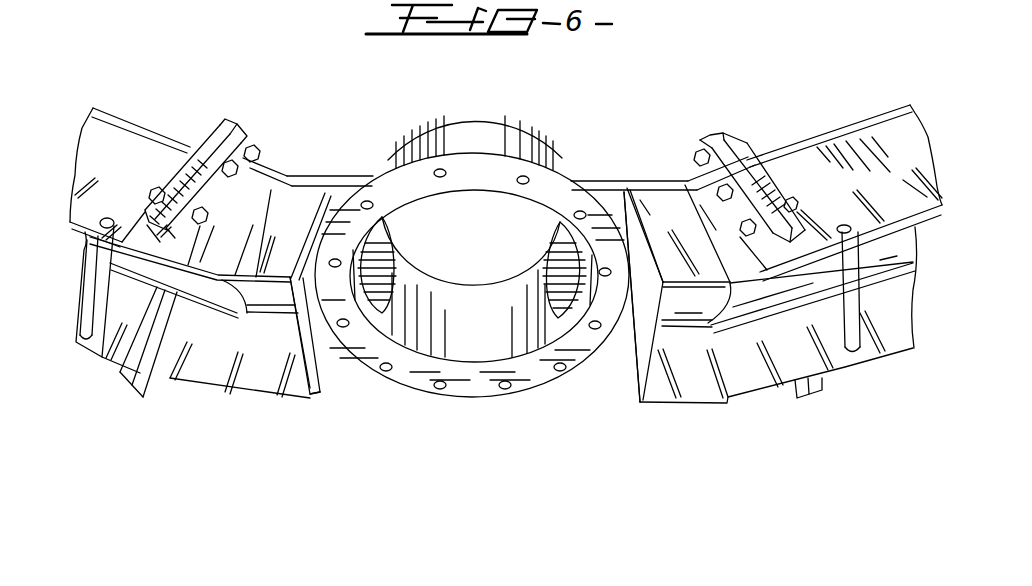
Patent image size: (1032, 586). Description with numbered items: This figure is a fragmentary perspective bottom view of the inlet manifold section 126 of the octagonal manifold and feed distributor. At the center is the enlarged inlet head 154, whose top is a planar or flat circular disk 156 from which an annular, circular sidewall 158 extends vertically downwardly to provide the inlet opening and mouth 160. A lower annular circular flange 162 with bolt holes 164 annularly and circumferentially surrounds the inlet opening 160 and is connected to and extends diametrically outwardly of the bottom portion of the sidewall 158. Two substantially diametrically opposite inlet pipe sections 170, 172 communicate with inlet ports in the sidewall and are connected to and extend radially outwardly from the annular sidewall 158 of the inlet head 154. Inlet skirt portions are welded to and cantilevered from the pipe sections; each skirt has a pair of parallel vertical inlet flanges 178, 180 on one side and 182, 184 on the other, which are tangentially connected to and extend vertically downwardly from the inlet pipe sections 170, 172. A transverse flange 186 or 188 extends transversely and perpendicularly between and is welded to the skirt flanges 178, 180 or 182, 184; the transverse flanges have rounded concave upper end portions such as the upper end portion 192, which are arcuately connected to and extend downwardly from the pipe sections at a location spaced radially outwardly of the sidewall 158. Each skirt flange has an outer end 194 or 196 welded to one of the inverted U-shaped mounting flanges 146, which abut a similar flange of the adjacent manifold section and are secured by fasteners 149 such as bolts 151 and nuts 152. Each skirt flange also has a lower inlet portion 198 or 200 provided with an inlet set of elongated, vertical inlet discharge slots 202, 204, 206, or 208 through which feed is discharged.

The inlet manifold section 126 is at (472, 246).
The inverted U-shaped mounting flange 146 is at (247, 127).
The fasteners 149 is at (262, 150).
The bolts 151 is at (747, 135).
The nuts 152 is at (690, 152).
The enlarged inlet head 154 is at (563, 160).
The planar circular disk 156 is at (470, 112).
The annular circular sidewall 158 is at (435, 135).
The inlet opening and mouth 160 is at (472, 364).
The lower annular circular flange 162 is at (415, 394).
The bolt holes 164 is at (512, 388).
The inlet pipe section 170 is at (341, 176).
The inlet pipe section 172 is at (598, 181).
The vertical inlet flange 178 is at (203, 267).
The vertical inlet flange 180 is at (190, 390).
The vertical inlet flange 182 is at (712, 278).
The vertical inlet flange 184 is at (713, 403).
The transverse flange 186 is at (310, 387).
The transverse flange 188 is at (655, 383).
The rounded concave upper end portion 192 is at (620, 190).
The outer end 194 is at (223, 196).
The outer end 196 is at (758, 173).
The lower inlet portion 198 is at (252, 393).
The lower inlet portion 200 is at (760, 393).
The inlet discharge slots 202 is at (271, 250).
The inlet discharge slots 204 is at (180, 362).
The inlet discharge slots 206 is at (688, 245).
The inlet discharge slots 208 is at (673, 400).